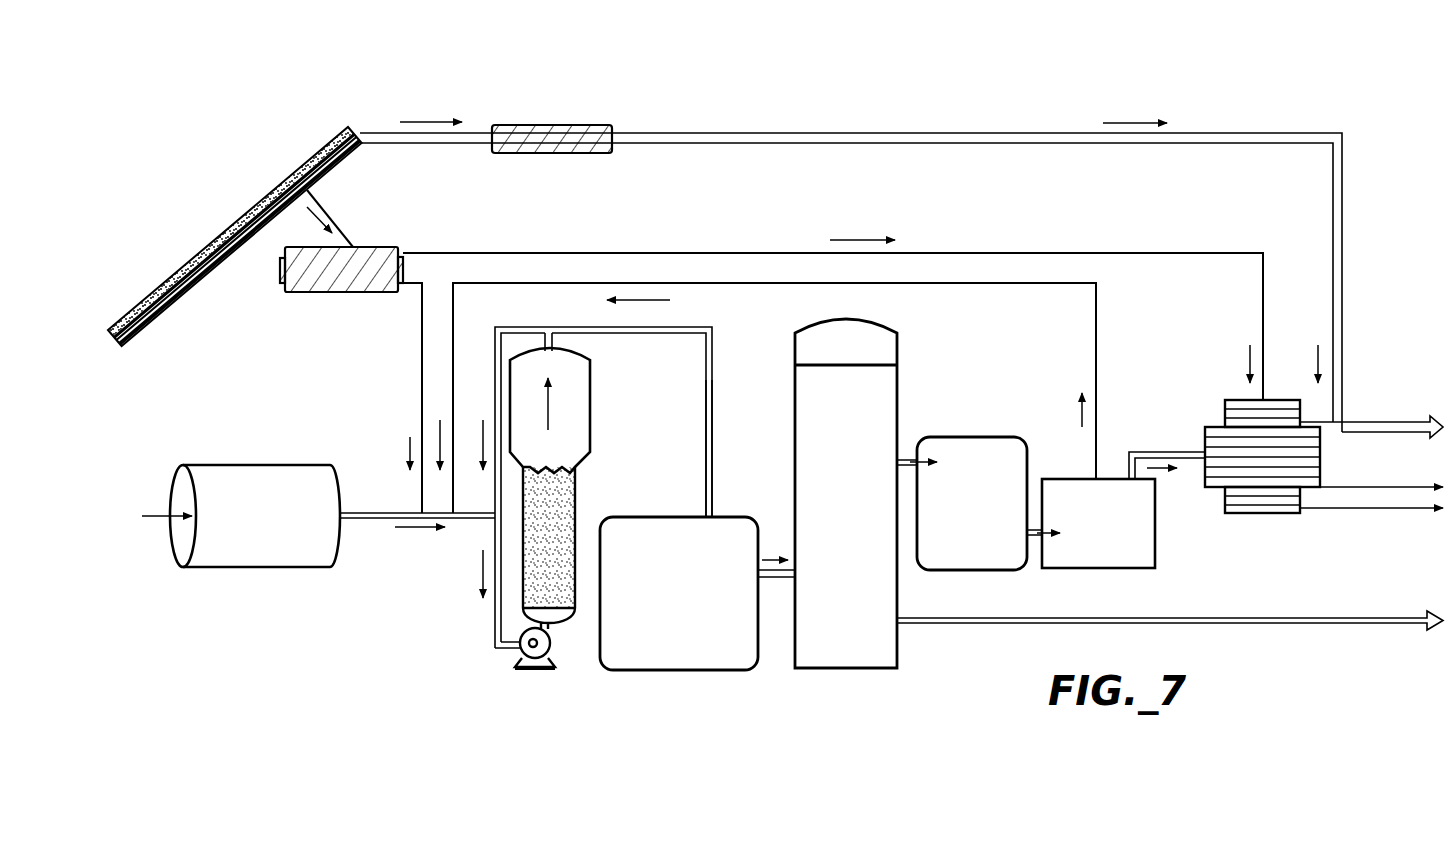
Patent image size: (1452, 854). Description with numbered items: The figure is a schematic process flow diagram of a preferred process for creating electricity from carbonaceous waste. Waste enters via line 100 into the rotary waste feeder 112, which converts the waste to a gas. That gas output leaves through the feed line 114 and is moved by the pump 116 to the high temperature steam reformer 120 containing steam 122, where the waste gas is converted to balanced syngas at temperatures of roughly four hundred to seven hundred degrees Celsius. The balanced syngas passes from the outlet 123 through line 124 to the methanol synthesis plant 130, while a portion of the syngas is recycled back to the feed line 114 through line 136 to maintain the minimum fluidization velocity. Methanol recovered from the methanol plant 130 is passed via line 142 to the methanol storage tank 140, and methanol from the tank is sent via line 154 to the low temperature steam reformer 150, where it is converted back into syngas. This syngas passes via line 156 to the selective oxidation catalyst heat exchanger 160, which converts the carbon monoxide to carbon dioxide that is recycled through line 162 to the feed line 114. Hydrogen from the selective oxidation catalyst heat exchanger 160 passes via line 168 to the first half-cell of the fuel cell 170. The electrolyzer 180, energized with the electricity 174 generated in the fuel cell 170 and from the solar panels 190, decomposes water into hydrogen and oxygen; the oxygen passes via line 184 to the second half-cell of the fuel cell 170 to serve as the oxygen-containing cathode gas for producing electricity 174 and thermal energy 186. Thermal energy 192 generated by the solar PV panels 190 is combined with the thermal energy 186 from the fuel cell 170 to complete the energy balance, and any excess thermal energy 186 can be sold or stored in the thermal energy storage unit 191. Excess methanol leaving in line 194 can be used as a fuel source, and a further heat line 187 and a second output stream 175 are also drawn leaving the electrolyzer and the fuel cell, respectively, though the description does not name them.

The line 100 is at (162, 513).
The rotary waste feeder 112 is at (258, 465).
The feed line 114 is at (350, 520).
The pump 116 is at (533, 672).
The high temperature steam reformer 120 is at (590, 420).
The steam 122 is at (562, 498).
The outlet 123 is at (555, 340).
The line 124 is at (714, 382).
The methanol synthesis plant 130 is at (685, 517).
The line 136 is at (525, 327).
The methanol storage tank 140 is at (840, 672).
The line 142 is at (773, 555).
The low temperature steam reformer 150 is at (982, 435).
The line 154 is at (903, 458).
The line 156 is at (1033, 540).
The selective oxidation catalyst heat exchanger 160 is at (1157, 527).
The line 162 is at (1097, 350).
The line 168 is at (1142, 452).
The fuel cell 170 is at (1327, 467).
The electricity 174 is at (1330, 513).
The outlet stream 175 is at (1357, 485).
The electrolyzer 180 is at (358, 293).
The line 184 is at (1028, 253).
The thermal energy 186 is at (1357, 418).
The heating line 187 is at (420, 357).
The solar PV panels 190 is at (257, 193).
The thermal energy storage unit 191 is at (573, 125).
The thermal energy 192 is at (845, 132).
The line 194 is at (1238, 625).